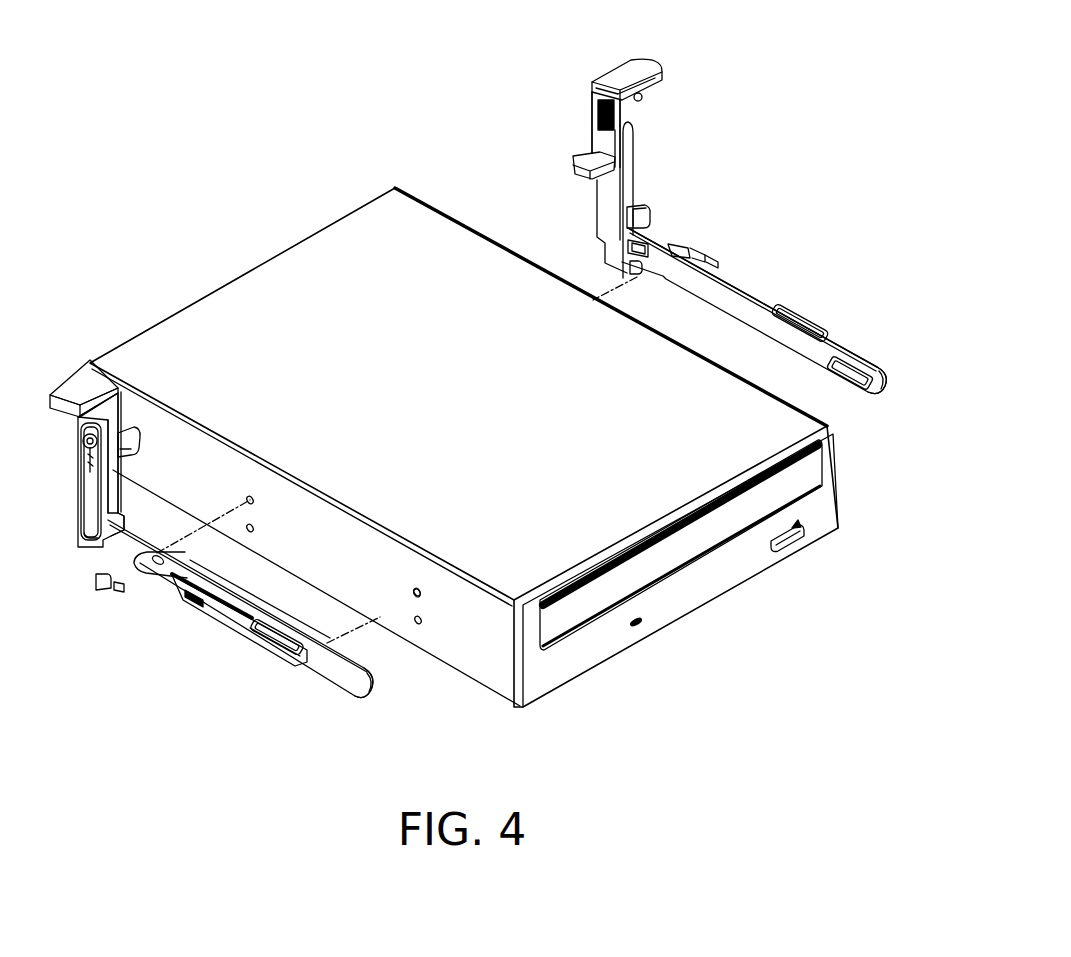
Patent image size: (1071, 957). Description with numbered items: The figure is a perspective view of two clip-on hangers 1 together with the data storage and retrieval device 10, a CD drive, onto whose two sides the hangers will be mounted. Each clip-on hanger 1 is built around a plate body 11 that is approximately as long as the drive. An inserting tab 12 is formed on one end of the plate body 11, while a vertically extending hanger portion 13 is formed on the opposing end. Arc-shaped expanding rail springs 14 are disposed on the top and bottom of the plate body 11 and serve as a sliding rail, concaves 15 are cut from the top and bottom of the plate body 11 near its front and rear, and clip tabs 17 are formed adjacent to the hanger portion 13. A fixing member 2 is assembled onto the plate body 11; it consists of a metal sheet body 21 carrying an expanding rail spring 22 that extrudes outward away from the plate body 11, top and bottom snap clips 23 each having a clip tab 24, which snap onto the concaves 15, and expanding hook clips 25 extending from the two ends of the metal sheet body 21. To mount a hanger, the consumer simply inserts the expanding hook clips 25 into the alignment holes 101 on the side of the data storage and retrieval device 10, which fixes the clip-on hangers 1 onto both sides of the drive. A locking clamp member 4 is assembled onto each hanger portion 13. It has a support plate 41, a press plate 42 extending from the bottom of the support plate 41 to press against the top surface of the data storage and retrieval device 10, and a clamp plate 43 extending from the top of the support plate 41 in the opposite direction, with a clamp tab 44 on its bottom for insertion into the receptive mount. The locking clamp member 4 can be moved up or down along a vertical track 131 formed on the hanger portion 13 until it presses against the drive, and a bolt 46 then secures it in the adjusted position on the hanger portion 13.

The clip-on hanger 1 is at (767, 283).
The fixing member 2 is at (214, 626).
The locking clamp member 4 is at (664, 53).
The data storage and retrieval device 10 is at (255, 285).
The plate body 11 is at (745, 275).
The inserting tab 12 is at (879, 392).
The hanger portion 13 is at (605, 202).
The expanding rail springs 14 is at (803, 318).
The concaves 15 is at (713, 258).
The clip tabs 17 is at (633, 209).
The metal sheet body 21 is at (263, 655).
The expanding rail spring 22 is at (190, 606).
The snap clips 23 is at (152, 557).
The clip tab 24 is at (182, 571).
The expanding hook clips 25 is at (624, 266).
The support plate 41 is at (597, 130).
The press plate 42 is at (578, 162).
The clamp plate 43 is at (623, 73).
The clamp tab 44 is at (643, 97).
The bolt 46 is at (89, 449).
The alignment holes 101 is at (418, 598).
The vertical track 131 is at (88, 538).